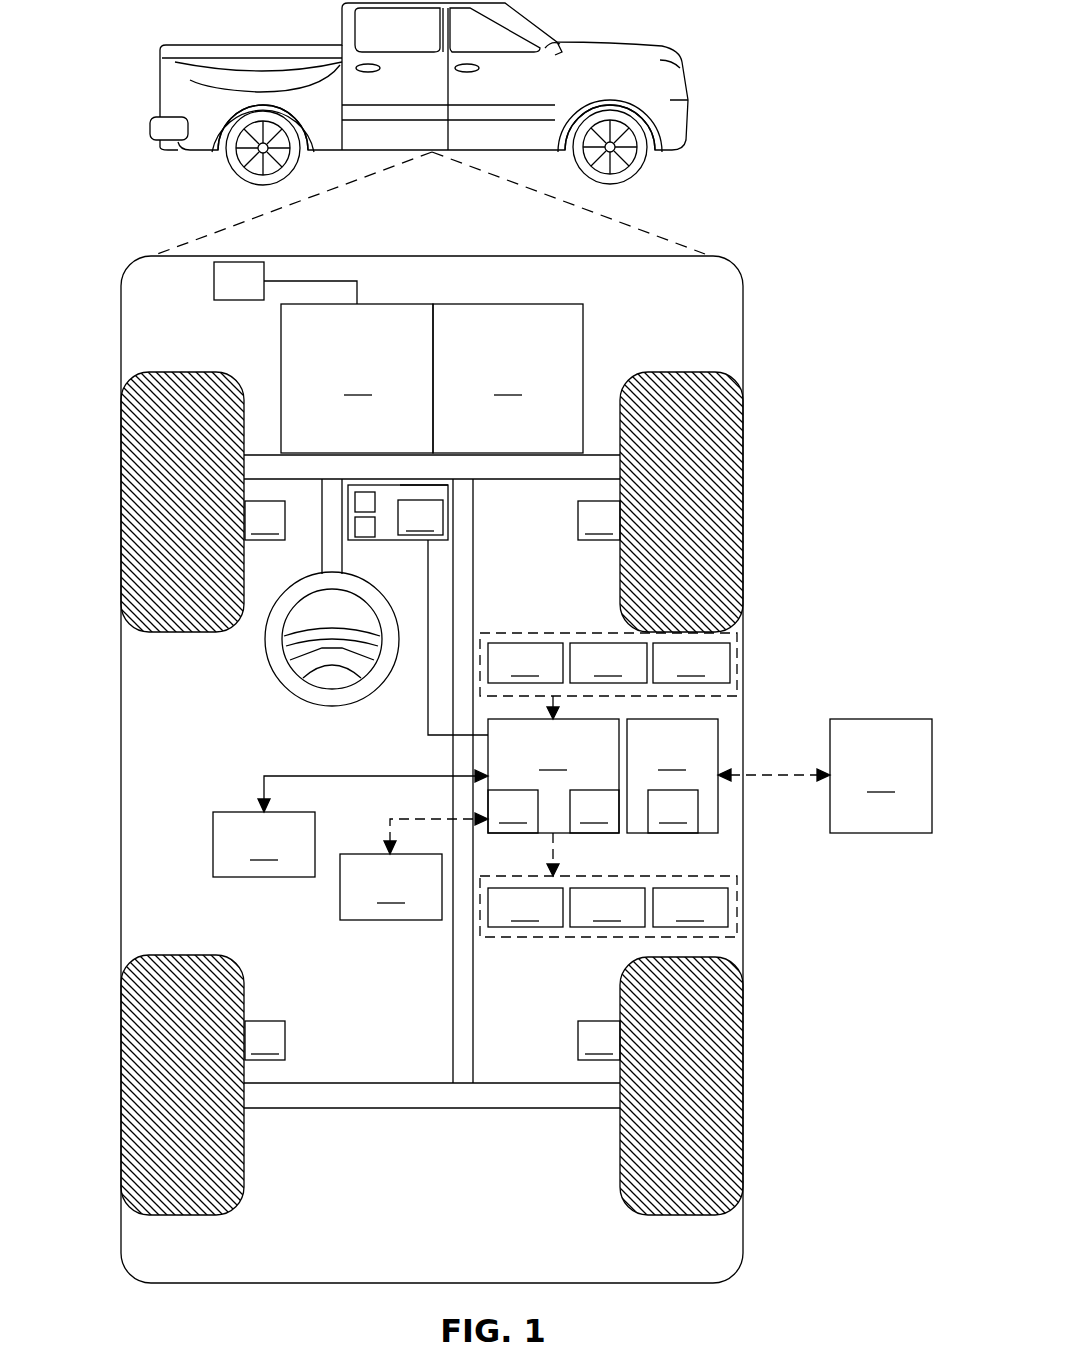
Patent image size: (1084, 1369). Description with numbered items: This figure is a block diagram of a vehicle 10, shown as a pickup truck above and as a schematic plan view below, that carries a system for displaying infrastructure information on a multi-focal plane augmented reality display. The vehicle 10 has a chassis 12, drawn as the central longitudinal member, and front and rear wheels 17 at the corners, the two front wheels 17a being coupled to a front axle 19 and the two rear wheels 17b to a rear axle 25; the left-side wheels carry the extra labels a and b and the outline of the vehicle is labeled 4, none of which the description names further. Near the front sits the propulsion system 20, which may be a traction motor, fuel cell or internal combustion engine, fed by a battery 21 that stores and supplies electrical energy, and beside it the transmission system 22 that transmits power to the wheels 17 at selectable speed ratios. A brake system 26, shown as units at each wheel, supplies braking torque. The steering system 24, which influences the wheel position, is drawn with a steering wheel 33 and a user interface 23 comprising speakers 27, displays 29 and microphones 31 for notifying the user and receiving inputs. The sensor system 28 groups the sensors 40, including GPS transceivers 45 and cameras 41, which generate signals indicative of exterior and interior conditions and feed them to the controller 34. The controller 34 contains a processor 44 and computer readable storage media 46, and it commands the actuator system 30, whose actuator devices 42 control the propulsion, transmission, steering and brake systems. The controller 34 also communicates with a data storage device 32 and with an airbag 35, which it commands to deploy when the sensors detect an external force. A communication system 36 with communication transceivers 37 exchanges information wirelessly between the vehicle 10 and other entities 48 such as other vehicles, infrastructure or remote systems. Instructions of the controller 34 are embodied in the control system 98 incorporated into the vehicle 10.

The vehicle 10 is at (622, 44).
The vehicle body 4 is at (121, 730).
The chassis 12 is at (452, 955).
The wheels 17 is at (194, 372).
The front wheels 17a is at (718, 490).
The rear wheels 17b is at (718, 1088).
The front left wheel a is at (146, 488).
The rear left wheel b is at (146, 1080).
The front axle 19 is at (545, 482).
The propulsion system 20 is at (357, 378).
The battery 21 is at (240, 262).
The transmission system 22 is at (508, 378).
The user interface 23 is at (410, 485).
The steering system 24 is at (351, 543).
The rear axle 25 is at (512, 1083).
The brake system 26 is at (432, 780).
The speakers 27 is at (365, 492).
The sensor system 28 is at (572, 632).
The displays 29 is at (355, 528).
The actuator system 30 is at (572, 938).
The microphones 31 is at (420, 517).
The data storage device 32 is at (414, 866).
The steering wheel 33 is at (268, 652).
The controller 34 is at (553, 776).
The airbag 35 is at (350, 823).
The communication system 36 is at (672, 776).
The communication transceivers 37 is at (673, 811).
The sensors 40 is at (525, 663).
The cameras 41 is at (691, 663).
The actuator devices 42 is at (608, 907).
The processor 44 is at (513, 811).
The GPS transceivers 45 is at (608, 663).
The computer readable storage device or media 46 is at (594, 811).
The other entities 48 is at (825, 776).
The control system 98 is at (404, 754).